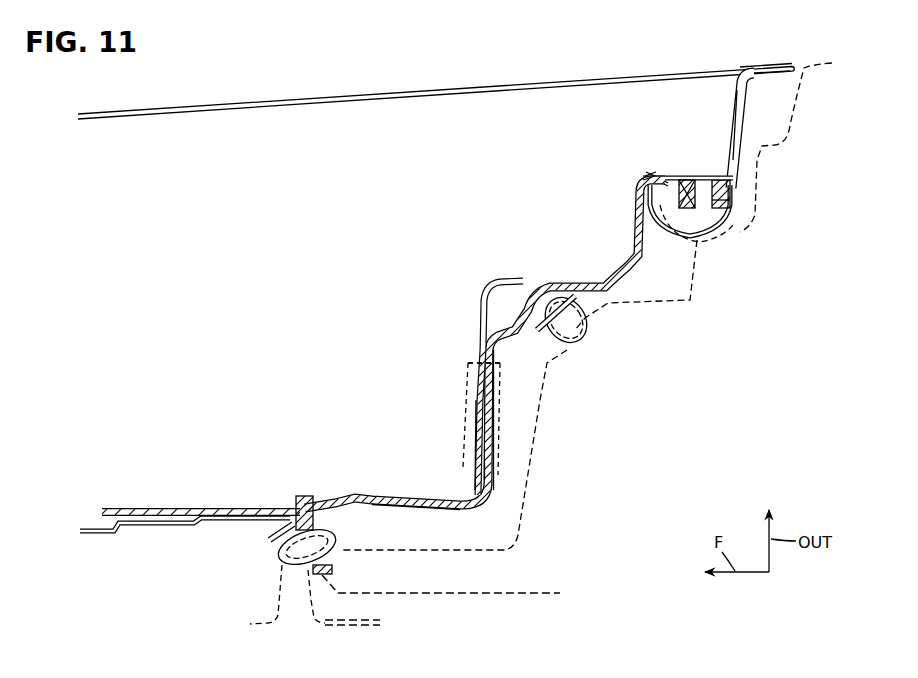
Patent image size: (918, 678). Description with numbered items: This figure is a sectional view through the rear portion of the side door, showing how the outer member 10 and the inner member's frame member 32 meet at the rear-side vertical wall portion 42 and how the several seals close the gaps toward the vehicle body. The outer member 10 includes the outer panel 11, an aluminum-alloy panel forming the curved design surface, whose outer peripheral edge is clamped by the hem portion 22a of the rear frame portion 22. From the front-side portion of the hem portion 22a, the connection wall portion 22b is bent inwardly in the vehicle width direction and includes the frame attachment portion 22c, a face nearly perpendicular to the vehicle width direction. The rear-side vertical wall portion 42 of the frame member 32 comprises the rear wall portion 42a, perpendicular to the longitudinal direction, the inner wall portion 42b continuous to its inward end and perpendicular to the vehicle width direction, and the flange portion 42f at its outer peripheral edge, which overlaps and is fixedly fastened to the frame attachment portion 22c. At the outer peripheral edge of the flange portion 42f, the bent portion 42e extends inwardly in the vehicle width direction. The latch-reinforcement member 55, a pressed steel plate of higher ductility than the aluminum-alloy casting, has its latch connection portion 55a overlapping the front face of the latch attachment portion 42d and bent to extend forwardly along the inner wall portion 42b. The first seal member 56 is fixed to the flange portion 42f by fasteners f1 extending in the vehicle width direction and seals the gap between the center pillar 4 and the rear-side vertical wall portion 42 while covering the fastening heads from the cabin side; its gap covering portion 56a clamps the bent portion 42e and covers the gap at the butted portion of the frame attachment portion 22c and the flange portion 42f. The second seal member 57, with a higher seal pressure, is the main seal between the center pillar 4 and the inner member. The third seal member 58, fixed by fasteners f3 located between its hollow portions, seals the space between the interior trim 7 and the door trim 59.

The center pillar 4 is at (468, 598).
The interior trim 7 is at (338, 630).
The outer member 10 is at (742, 64).
The outer panel 11 is at (471, 90).
The rear frame portion 22 is at (742, 128).
The hem portion 22a is at (762, 75).
The connection wall portion 22b is at (728, 122).
The frame attachment portion 22c is at (665, 177).
The fastener f1 is at (687, 178).
The fastener f3 is at (303, 497).
The frame member 32 is at (505, 448).
The rear-side vertical wall portion 42 is at (485, 504).
The rear wall portion 42a is at (493, 372).
The inner wall portion 42b is at (397, 515).
The latch attachment portion 42d is at (533, 487).
The bent portion 42e is at (730, 200).
The flange portion 42f is at (643, 180).
The latch-reinforcement member 55 is at (472, 316).
The latch connection portion 55a is at (481, 395).
The first seal member 56 is at (708, 229).
The gap covering portion 56a is at (740, 177).
The second seal member 57 is at (585, 347).
The third seal member 58 is at (272, 540).
The door trim 59 is at (252, 632).